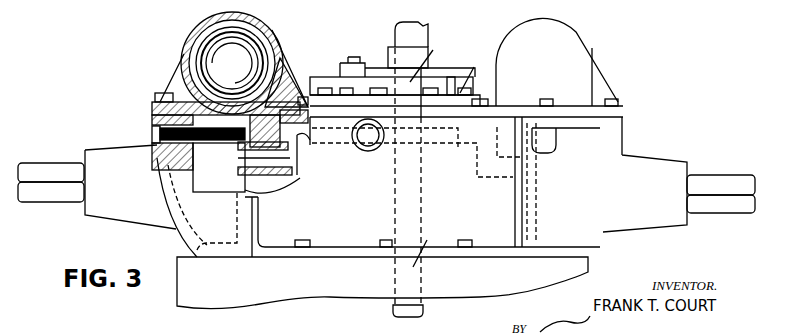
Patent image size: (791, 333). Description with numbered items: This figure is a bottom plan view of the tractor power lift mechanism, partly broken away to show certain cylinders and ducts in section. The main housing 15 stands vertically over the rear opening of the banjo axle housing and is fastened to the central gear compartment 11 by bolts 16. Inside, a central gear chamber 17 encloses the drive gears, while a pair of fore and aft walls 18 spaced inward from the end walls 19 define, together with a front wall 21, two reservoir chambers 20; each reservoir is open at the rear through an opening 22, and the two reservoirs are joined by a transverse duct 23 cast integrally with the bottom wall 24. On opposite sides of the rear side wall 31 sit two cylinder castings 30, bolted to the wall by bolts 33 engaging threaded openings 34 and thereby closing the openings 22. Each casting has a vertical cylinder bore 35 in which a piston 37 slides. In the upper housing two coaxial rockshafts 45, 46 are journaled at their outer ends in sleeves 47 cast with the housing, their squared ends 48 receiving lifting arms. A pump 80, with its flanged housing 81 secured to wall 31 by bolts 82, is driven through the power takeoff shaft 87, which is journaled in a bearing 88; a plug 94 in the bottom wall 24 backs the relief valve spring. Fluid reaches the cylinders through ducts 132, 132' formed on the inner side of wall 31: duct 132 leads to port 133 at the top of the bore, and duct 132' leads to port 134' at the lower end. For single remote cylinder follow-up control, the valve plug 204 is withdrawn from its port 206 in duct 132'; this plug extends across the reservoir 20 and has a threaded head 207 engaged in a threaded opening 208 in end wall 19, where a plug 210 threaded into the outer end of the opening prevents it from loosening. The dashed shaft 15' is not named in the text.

The central gear compartment 11 is at (463, 290).
The main housing 15 is at (549, 5).
The vertical shaft 15' is at (408, 182).
The bolts 16 is at (380, 240).
The gear chamber 17 is at (289, 189).
The fore and aft extending walls 18 is at (253, 199).
The end walls 19 is at (172, 236).
The reservoir chamber 20 is at (216, 184).
The front wall 21 is at (220, 251).
The reservoir openings 22 is at (232, 63).
The transverse passageway or duct 23 is at (311, 167).
The bottom wall 24 is at (410, 262).
The cylinder castings 30 is at (252, 31).
The rear side wall 31 is at (573, 106).
The bolts 33 is at (154, 98).
The threaded openings 34 is at (345, 4).
The cylinder bores 35 is at (282, 58).
The piston 37 is at (222, 40).
The rockshaft 45 is at (728, 176).
The rockshaft 46 is at (42, 163).
The sleeves 47 is at (131, 185).
The squared outer ends 48 is at (54, 202).
The pump 80 is at (454, 63).
The pump housing 81 is at (433, 50).
The bolts 82 is at (467, 72).
The power takeoff shaft 87 is at (398, 33).
The bearing 88 is at (388, 56).
The plug 94 is at (377, 149).
The duct 132 is at (466, 127).
The duct 132' is at (548, 159).
The port 133 is at (243, 102).
The port 134' is at (306, 78).
The valve plug 204 is at (219, 167).
The port 206 is at (300, 151).
The threaded head portions 207 is at (218, 88).
The threaded openings 208 is at (200, 102).
The plug 210 is at (151, 131).